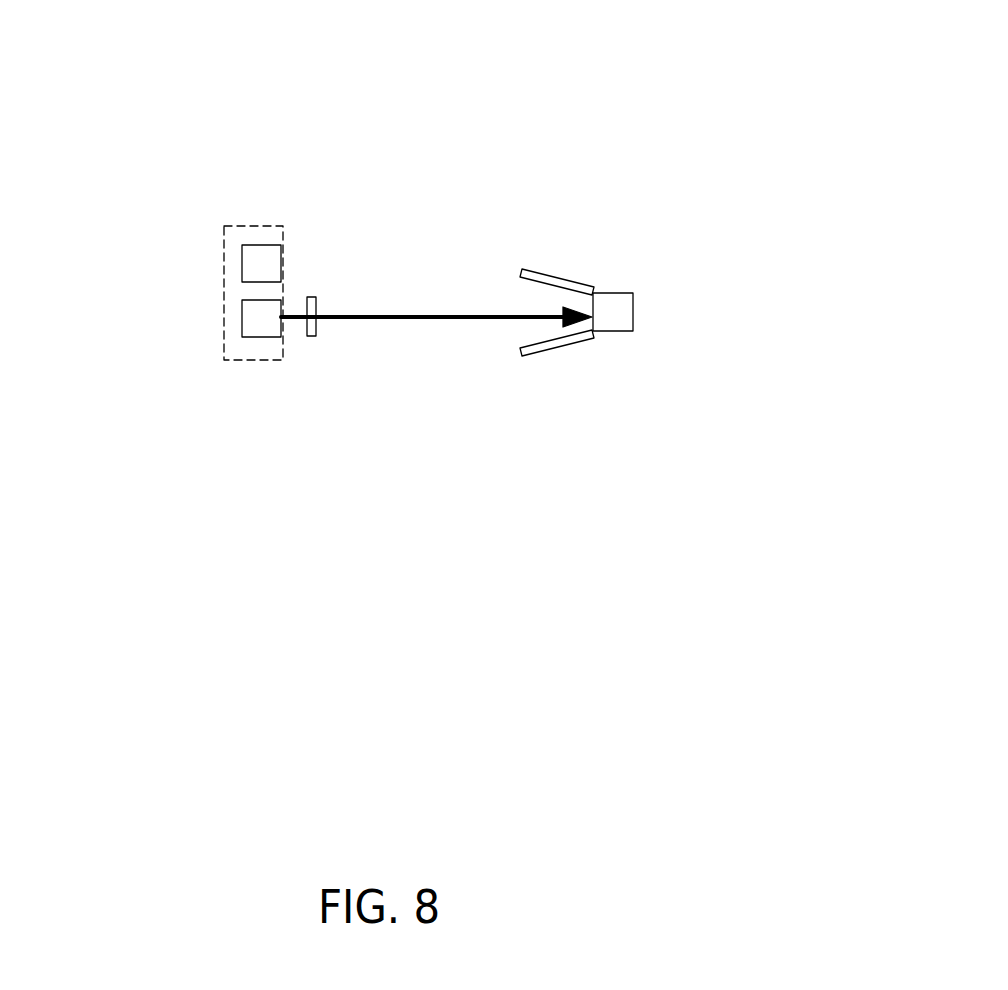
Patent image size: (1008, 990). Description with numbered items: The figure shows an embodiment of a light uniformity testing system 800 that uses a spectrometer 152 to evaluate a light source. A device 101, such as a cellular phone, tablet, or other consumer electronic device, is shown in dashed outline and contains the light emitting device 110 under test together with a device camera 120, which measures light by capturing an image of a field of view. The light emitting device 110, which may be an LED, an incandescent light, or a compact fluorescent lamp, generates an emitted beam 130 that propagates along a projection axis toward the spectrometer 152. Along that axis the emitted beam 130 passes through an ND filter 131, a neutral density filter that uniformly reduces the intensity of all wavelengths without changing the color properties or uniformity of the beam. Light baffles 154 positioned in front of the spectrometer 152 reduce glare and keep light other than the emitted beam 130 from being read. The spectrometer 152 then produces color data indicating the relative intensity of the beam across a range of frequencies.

The light uniformity testing system 800 is at (446, 54).
The device 101 is at (223, 280).
The light emitting device 110 is at (259, 337).
The device camera 120 is at (262, 245).
The emitted beam 130 is at (407, 319).
The ND filter 131 is at (310, 336).
The spectrometer 152 is at (633, 310).
The light baffle 154 is at (563, 280).